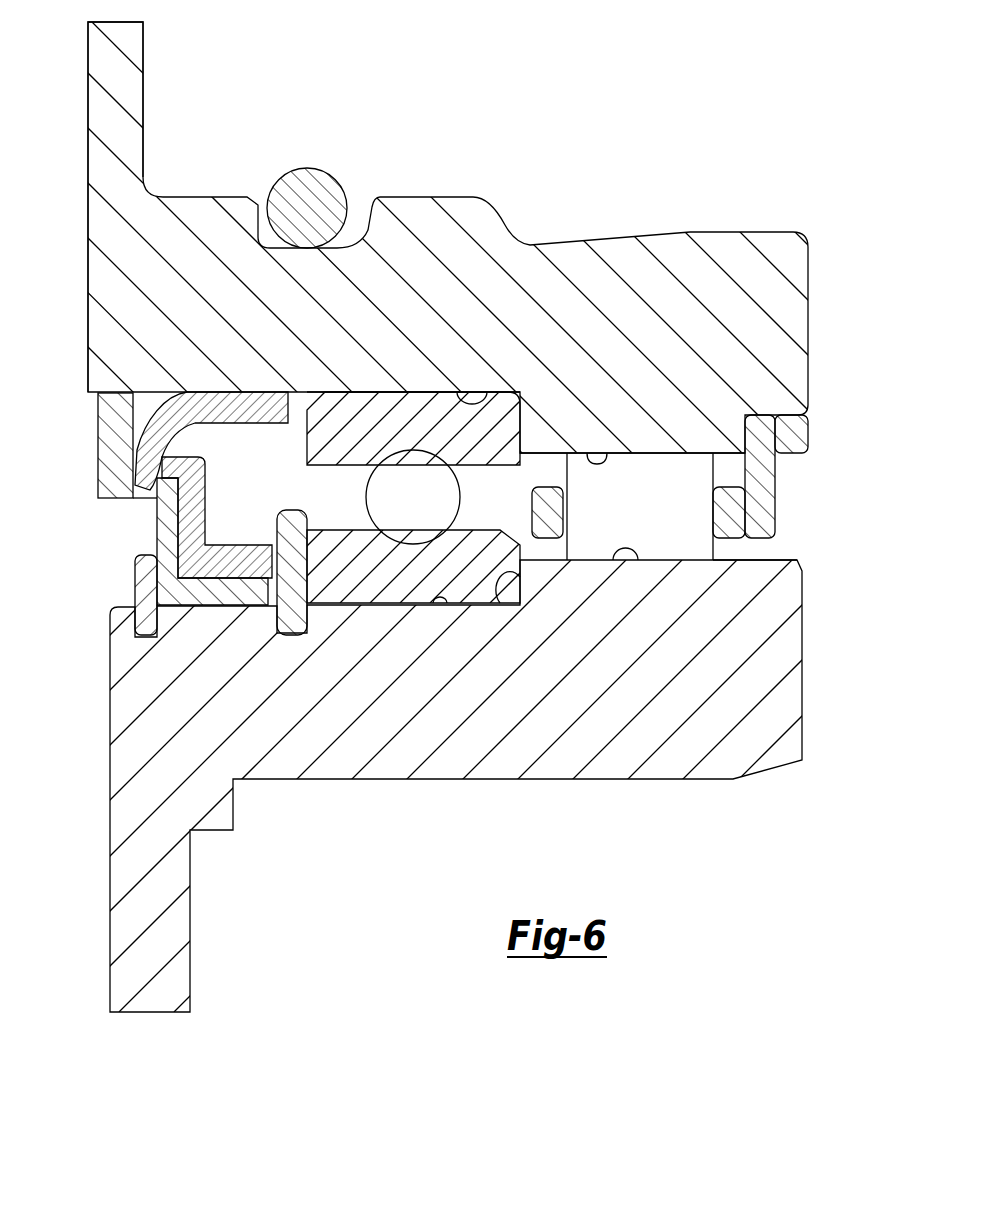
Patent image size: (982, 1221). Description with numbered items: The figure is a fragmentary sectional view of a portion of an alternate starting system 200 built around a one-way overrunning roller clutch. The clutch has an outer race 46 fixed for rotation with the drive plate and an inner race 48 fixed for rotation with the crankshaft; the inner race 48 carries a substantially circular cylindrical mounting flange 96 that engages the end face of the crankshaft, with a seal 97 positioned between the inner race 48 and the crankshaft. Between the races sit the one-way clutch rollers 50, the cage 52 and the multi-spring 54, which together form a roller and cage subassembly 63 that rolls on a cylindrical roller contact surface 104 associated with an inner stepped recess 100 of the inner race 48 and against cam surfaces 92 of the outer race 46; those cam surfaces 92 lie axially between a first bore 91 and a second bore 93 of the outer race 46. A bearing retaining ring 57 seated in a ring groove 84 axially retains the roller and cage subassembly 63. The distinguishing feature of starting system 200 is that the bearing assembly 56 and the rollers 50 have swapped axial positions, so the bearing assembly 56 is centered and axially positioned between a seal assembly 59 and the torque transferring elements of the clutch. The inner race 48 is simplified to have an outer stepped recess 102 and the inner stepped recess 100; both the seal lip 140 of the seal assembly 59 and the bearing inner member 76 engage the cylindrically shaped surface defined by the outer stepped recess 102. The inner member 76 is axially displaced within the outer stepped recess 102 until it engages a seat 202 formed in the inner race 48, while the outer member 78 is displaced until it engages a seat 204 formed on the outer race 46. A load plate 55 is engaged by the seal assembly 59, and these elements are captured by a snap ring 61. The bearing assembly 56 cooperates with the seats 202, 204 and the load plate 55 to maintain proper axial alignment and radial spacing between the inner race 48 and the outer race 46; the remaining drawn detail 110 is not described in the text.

The starting system 200 is at (525, 80).
The outer race 46 is at (607, 760).
The inner race 48 is at (410, 197).
The rollers 50 is at (625, 482).
The cage 52 is at (545, 485).
The multi-spring 54 is at (733, 485).
The load plate 55 is at (290, 620).
The bearing assembly 56 is at (407, 388).
The inner bearing retaining ring 57 is at (768, 480).
The seal assembly 59 is at (213, 614).
The snap ring 61 is at (135, 582).
The roller and cage subassembly 63 is at (687, 448).
The inner member 76 is at (373, 407).
The outer member 78 is at (380, 607).
The ring groove 84 is at (775, 415).
The first bore 91 is at (763, 552).
The cam surfaces 92 is at (626, 566).
The second bore 93 is at (413, 603).
The mounting flange 96 is at (113, 48).
The seal 97 is at (300, 177).
The inner stepped recess 100 is at (668, 455).
The outer stepped recess 102 is at (487, 400).
The roller contact surface 104 is at (587, 485).
The corner 110 is at (733, 550).
The seal lip 140 is at (208, 390).
The seat 202 is at (435, 497).
The seat 204 is at (505, 603).